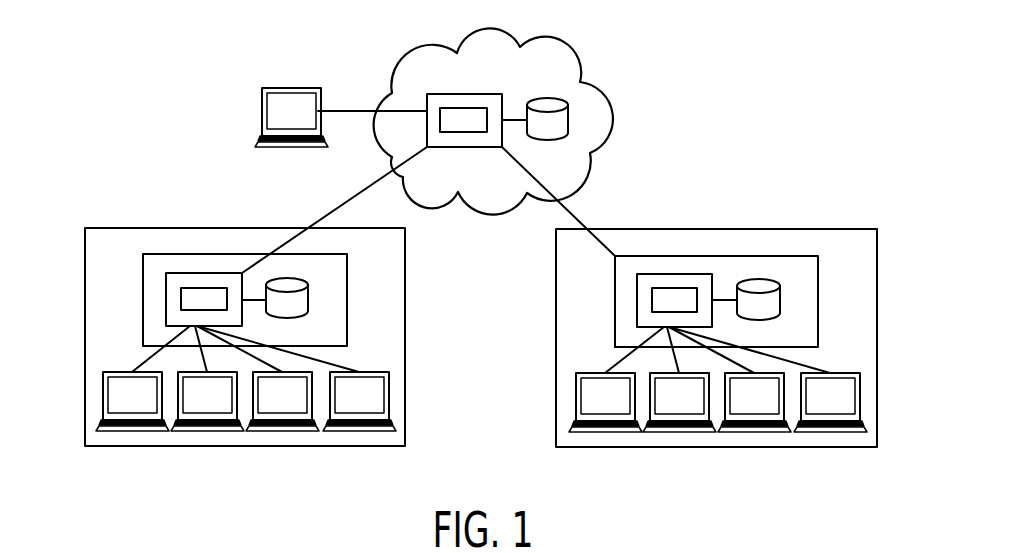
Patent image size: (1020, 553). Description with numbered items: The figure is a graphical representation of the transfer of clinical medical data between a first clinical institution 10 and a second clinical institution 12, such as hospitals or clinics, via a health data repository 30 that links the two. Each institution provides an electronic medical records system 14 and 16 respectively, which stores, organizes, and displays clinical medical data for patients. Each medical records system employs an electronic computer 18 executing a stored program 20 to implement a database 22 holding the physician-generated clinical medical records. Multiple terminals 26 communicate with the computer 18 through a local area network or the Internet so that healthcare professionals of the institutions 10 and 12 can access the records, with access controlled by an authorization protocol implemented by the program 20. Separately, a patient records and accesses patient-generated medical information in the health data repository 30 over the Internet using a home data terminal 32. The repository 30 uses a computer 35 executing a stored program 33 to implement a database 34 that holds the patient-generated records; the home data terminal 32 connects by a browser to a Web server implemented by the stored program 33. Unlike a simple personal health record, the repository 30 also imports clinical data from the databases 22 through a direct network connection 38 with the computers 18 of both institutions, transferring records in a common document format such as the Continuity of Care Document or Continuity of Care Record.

The first clinical institution 10 is at (105, 227).
The second clinical institution 12 is at (768, 229).
The electronic medical records system 14 is at (142, 302).
The electronic medical records system 16 is at (613, 303).
The electronic computer 18 is at (180, 273).
The stored program 20 is at (210, 288).
The database 22 is at (310, 298).
The terminal 26 is at (145, 431).
The health data repository 30 is at (570, 40).
The home data terminal 32 is at (290, 88).
The stored program 33 is at (463, 108).
The database 34 is at (570, 112).
The computer 35 is at (482, 94).
The direct network connection 38 is at (332, 202).